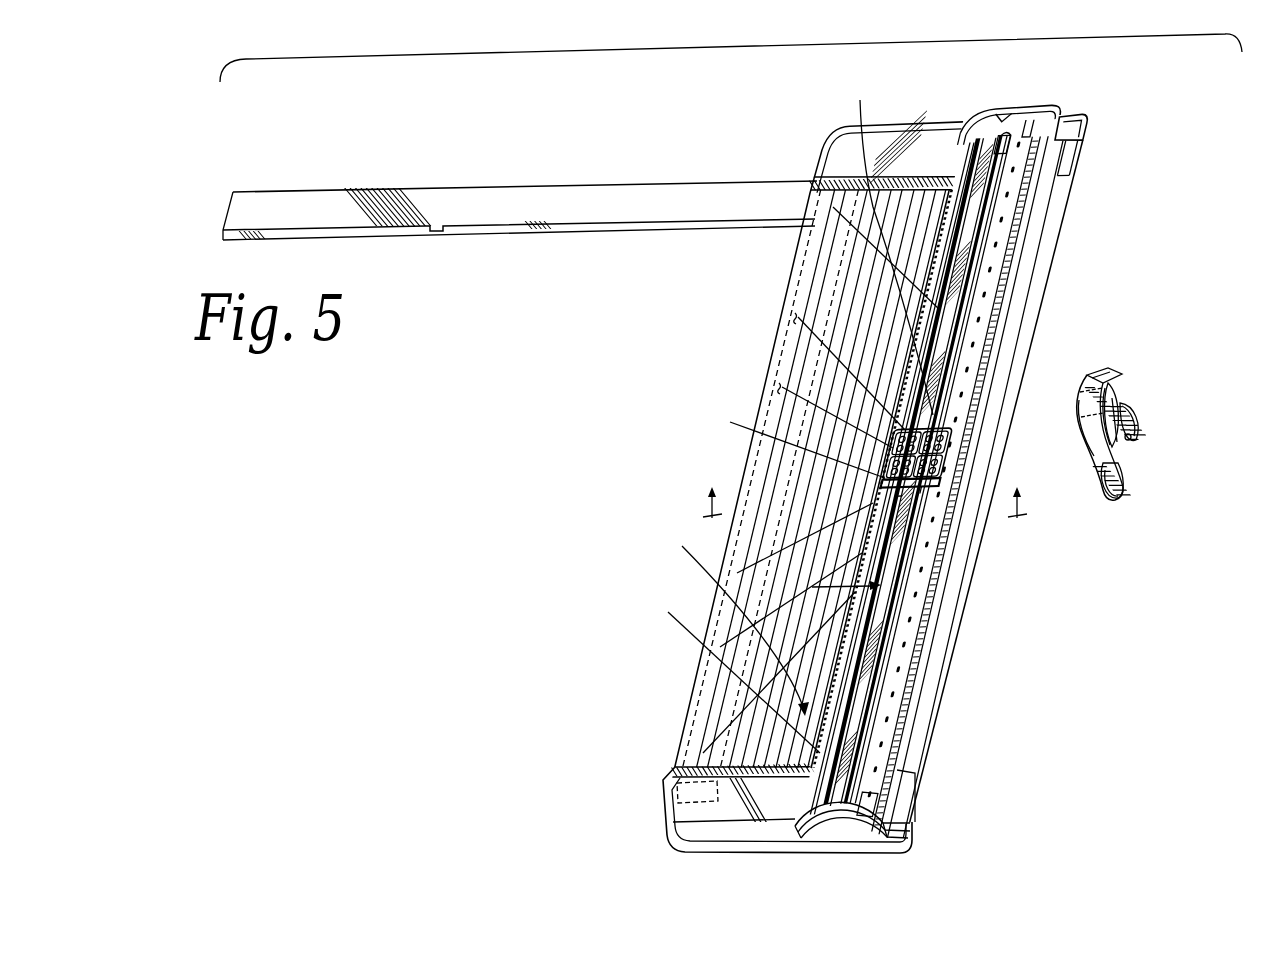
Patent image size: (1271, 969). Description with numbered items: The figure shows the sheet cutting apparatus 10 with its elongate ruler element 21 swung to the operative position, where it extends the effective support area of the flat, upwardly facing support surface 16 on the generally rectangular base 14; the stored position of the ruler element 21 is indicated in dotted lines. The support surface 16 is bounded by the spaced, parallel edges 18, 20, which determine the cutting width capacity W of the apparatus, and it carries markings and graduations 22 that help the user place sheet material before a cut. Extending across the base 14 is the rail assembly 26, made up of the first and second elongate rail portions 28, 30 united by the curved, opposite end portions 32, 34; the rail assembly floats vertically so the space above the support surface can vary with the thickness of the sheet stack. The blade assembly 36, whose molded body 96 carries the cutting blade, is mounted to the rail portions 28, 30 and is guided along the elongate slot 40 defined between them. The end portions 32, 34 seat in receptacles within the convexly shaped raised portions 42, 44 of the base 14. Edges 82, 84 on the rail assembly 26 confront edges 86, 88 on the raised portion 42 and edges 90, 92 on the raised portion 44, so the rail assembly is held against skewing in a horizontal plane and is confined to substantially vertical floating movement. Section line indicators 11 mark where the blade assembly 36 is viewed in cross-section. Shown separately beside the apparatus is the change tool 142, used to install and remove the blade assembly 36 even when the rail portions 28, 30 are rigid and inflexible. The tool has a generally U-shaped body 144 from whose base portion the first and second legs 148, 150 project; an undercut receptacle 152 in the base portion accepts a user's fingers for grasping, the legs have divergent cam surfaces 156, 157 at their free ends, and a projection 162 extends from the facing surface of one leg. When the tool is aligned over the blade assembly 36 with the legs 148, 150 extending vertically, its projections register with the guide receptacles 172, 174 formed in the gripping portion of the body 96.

The sheet cutting apparatus 10 is at (1058, 641).
The section line 11 is at (866, 488).
The base 14 is at (738, 848).
The support surface 16 is at (720, 716).
The edge 18 is at (816, 212).
The edge 20 is at (693, 767).
The ruler element 21 is at (540, 180).
The markings and graduations 22 is at (682, 546).
The rail assembly 26 is at (1003, 267).
The first rail portion 28 is at (886, 244).
The second rail portion 30 is at (1033, 217).
The end portion 32 is at (1000, 118).
The end portion 34 is at (862, 840).
The blade assembly 36 is at (930, 450).
The elongate slot 40 is at (980, 207).
The raised portion 42 is at (1025, 113).
The raised portion 44 is at (834, 836).
The edge 82 is at (920, 688).
The edge 84 is at (730, 422).
The edge 86 is at (1060, 118).
The edge 88 is at (965, 122).
The edge 90 is at (880, 792).
The edge 92 is at (668, 612).
The molded body 96 is at (920, 470).
The change tool 142 is at (1135, 383).
The U-shaped body 144 is at (1090, 377).
The first leg 148 is at (1097, 482).
The second leg 150 is at (1140, 417).
The receptacle 152 is at (1122, 388).
The cam surface 156 is at (1120, 496).
The cam surface 157 is at (1137, 439).
The second projection 162 is at (1120, 444).
The guide receptacle 172 is at (782, 387).
The guide receptacle 174 is at (798, 317).
The cutting width capacity W is at (903, 585).